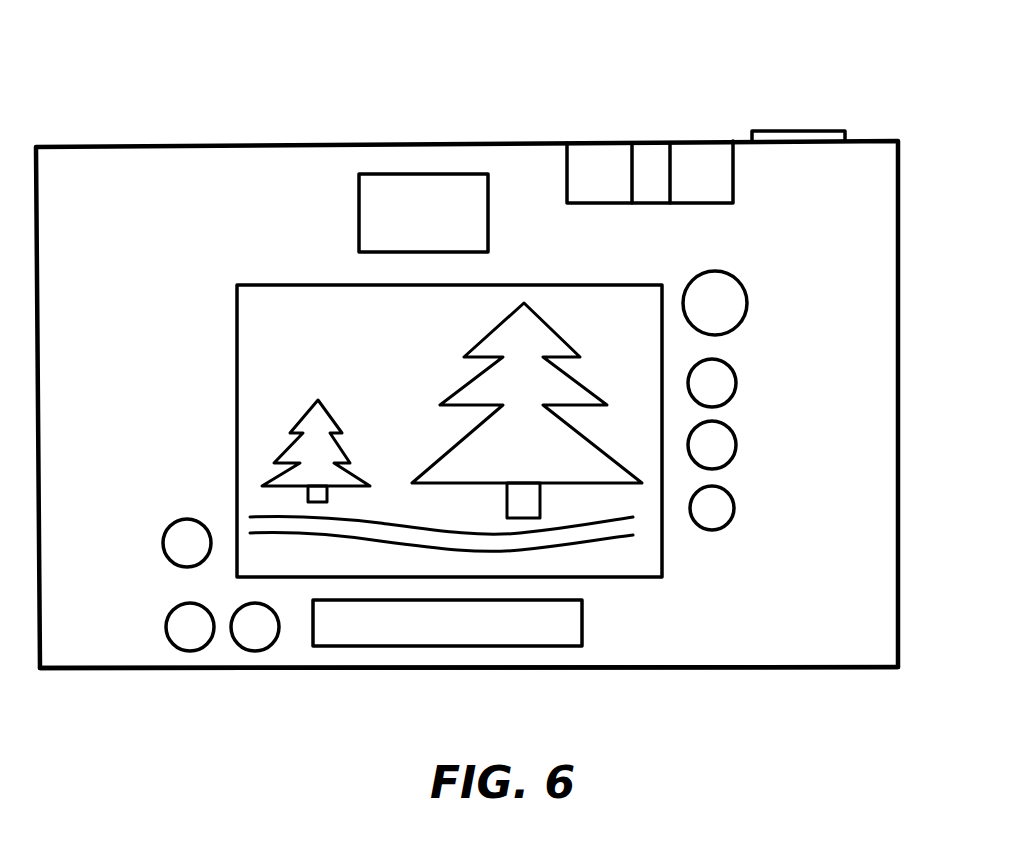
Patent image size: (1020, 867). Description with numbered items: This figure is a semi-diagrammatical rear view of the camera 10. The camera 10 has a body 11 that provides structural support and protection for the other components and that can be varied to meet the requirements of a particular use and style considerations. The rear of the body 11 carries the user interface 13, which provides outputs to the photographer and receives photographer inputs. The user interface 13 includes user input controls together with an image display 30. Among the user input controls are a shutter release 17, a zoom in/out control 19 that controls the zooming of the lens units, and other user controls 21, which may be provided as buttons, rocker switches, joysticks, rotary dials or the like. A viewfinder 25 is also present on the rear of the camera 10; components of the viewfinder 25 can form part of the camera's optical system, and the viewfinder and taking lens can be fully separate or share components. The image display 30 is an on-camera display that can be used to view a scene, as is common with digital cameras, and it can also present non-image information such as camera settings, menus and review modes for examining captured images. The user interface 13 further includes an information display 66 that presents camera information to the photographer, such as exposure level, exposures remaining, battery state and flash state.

The camera 10 is at (233, 122).
The body 11 is at (77, 672).
The user interface 13 is at (665, 612).
The shutter release 17 is at (800, 130).
The zoom in/out control 19 is at (628, 165).
The user controls 21 is at (735, 373).
The viewfinder 25 is at (419, 174).
The image display 30 is at (237, 432).
The information display 66 is at (455, 648).